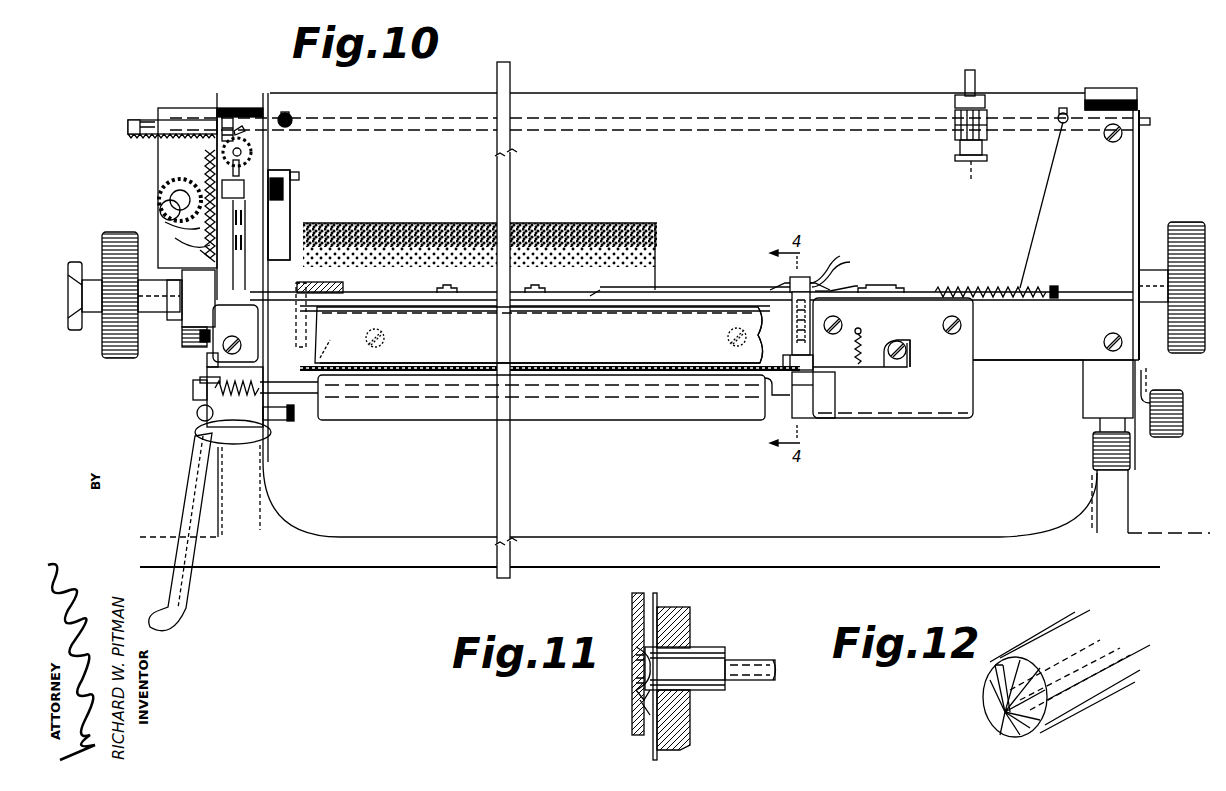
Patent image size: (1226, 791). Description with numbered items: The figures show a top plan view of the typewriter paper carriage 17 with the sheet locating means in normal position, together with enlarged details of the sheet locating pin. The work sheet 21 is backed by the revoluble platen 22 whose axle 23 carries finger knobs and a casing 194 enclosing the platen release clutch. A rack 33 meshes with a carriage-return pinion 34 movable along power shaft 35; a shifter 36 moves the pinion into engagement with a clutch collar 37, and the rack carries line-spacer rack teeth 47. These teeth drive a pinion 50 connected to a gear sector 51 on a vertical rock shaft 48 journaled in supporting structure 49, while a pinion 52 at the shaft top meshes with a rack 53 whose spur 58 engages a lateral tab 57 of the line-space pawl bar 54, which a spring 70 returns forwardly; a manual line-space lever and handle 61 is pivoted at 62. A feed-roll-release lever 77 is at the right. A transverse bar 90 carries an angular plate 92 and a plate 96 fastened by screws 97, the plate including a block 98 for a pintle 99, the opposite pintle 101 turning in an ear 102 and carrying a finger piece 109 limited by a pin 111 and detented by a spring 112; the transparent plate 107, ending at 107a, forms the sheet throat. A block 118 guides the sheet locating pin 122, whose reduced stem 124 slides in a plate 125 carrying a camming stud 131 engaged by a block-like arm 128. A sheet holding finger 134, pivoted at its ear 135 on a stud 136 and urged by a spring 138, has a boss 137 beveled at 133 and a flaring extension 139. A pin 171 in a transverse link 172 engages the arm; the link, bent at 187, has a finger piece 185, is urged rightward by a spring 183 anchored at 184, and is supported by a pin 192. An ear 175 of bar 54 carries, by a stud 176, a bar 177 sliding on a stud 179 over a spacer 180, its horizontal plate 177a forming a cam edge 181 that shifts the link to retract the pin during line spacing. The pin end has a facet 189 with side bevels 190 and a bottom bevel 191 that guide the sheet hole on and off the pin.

In FIG. 10, the paper carriage 17 is at (1130, 490).
In FIG. 10, the work sheet 21 is at (780, 358).
In FIG. 11, the work sheet 21 is at (657, 600).
In FIG. 10, the platen 22 is at (540, 222).
In FIG. 10, the platen axle 23 is at (168, 316).
In FIG. 10, the rack 33 is at (145, 122).
In FIG. 10, the carriage-return pinion 34 is at (988, 133).
In FIG. 10, the power shaft 35 is at (976, 80).
In FIG. 10, the shifter 36 is at (987, 152).
In FIG. 10, the clutch collar 37 is at (986, 100).
In FIG. 10, the line-spacer rack teeth 47 is at (132, 138).
In FIG. 10, the vertical rock shaft 48 is at (160, 188).
In FIG. 10, the supporting structure 49 is at (192, 108).
In FIG. 10, the pinion 50 is at (252, 152).
In FIG. 10, the gear sector 51 is at (198, 175).
In FIG. 10, the pinion 52 is at (160, 206).
In FIG. 10, the rack 53 is at (180, 232).
In FIG. 10, the bar 54 is at (285, 215).
In FIG. 10, the lateral tab 57 is at (205, 256).
In FIG. 10, the spur 58 is at (200, 248).
In FIG. 10, the line-space lever and handle 61 is at (192, 582).
In FIG. 10, the pivot 62 is at (196, 430).
In FIG. 10, the spring 70 is at (240, 172).
In FIG. 10, the feed-roll-release lever 77 is at (1160, 390).
In FIG. 10, the transverse bar 90 is at (1003, 361).
In FIG. 10, the transverse plate 92 is at (712, 305).
In FIG. 10, the plate 96 is at (975, 328).
In FIG. 10, the screws 97 is at (848, 306).
In FIG. 10, the block 98 is at (808, 404).
In FIG. 10, the pintle 99 is at (808, 386).
In FIG. 10, the pintle 101 is at (195, 392).
In FIG. 10, the ear 102 is at (198, 412).
In FIG. 10, the plate 107 is at (338, 385).
In FIG. 10, the end of plate 107 107a is at (535, 363).
In FIG. 10, the finger piece 109 is at (200, 380).
In FIG. 10, the pin 111 is at (206, 358).
In FIG. 10, the spring 112 is at (228, 388).
In FIG. 10, the block 118 is at (792, 328).
In FIG. 11, the block 118 is at (690, 616).
In FIG. 10, the sheet locating pin 122 is at (808, 340).
In FIG. 11, the sheet locating pin 122 is at (716, 648).
In FIG. 12, the sheet locating pin 122 is at (1085, 712).
In FIG. 11, the reduced stem 124 is at (752, 660).
In FIG. 10, the plate 125 is at (856, 287).
In FIG. 10, the block-like arm 128 is at (858, 258).
In FIG. 10, the camming stud 131 is at (830, 290).
In FIG. 11, the bevel 133 is at (690, 713).
In FIG. 10, the sheet holding finger 134 is at (866, 370).
In FIG. 11, the sheet holding finger 134 is at (630, 612).
In FIG. 10, the ear 135 is at (908, 344).
In FIG. 10, the headed shoulder stud 136 is at (910, 350).
In FIG. 11, the boss 137 is at (642, 704).
In FIG. 10, the spring 138 is at (860, 332).
In FIG. 10, the lateral extension 139 is at (778, 394).
In FIG. 10, the pin 171 is at (846, 248).
In FIG. 10, the transverse link 172 is at (634, 285).
In FIG. 10, the ear 175 is at (272, 426).
In FIG. 10, the headed shoulder stud 176 is at (294, 420).
In FIG. 10, the bar 177 is at (290, 210).
In FIG. 10, the horizontal plate 177a is at (345, 348).
In FIG. 10, the headed stud 179 is at (290, 186).
In FIG. 10, the spacer 180 is at (275, 178).
In FIG. 10, the cam edge 181 is at (325, 340).
In FIG. 10, the spring 183 is at (957, 290).
In FIG. 10, the anchor 184 is at (1052, 287).
In FIG. 10, the finger piece 185 is at (322, 282).
In FIG. 10, the bend 187 is at (783, 282).
In FIG. 11, the facet 189 is at (636, 660).
In FIG. 12, the facet 189 is at (998, 708).
In FIG. 11, the side bevels 190 is at (640, 670).
In FIG. 12, the side bevels 190 is at (992, 675).
In FIG. 11, the bottom bevel 191 is at (640, 692).
In FIG. 12, the bottom bevel 191 is at (1005, 725).
In FIG. 10, the pin 192 is at (235, 333).
In FIG. 10, the casing 194 is at (185, 346).